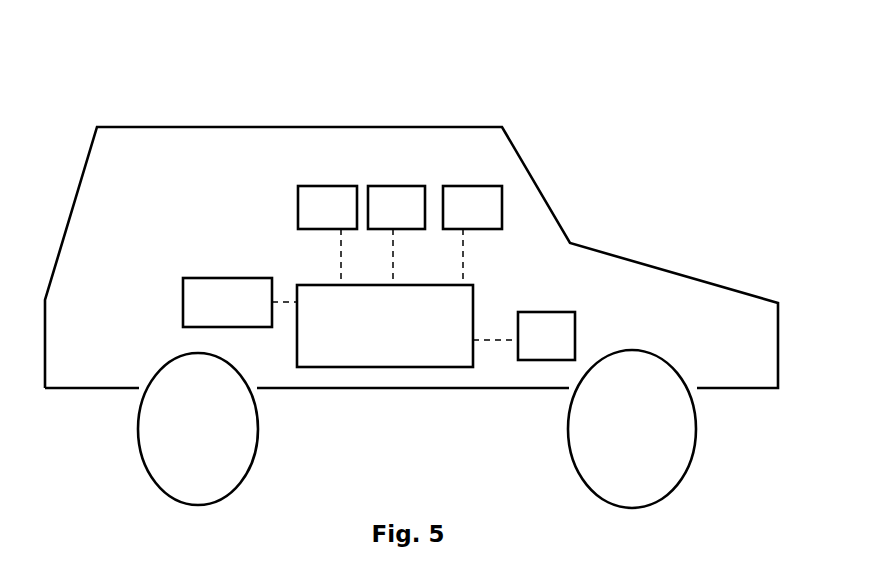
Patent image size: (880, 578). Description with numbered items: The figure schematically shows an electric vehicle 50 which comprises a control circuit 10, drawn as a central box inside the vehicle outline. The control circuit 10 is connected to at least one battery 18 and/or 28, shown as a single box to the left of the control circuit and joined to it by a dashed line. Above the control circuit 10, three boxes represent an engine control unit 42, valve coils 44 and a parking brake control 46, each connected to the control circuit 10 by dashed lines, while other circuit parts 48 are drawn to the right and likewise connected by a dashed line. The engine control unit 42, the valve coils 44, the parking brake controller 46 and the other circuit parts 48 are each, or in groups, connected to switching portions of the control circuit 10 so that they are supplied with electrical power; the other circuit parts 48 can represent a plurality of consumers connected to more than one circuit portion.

The electric vehicle 50 is at (411, 272).
The control circuit 10 is at (385, 326).
The battery 18 is at (227, 302).
The battery 28 is at (227, 302).
The engine control unit 42 is at (327, 207).
The valve coils 44 is at (396, 207).
The parking brake control 46 is at (472, 207).
The other circuit parts 48 is at (546, 336).